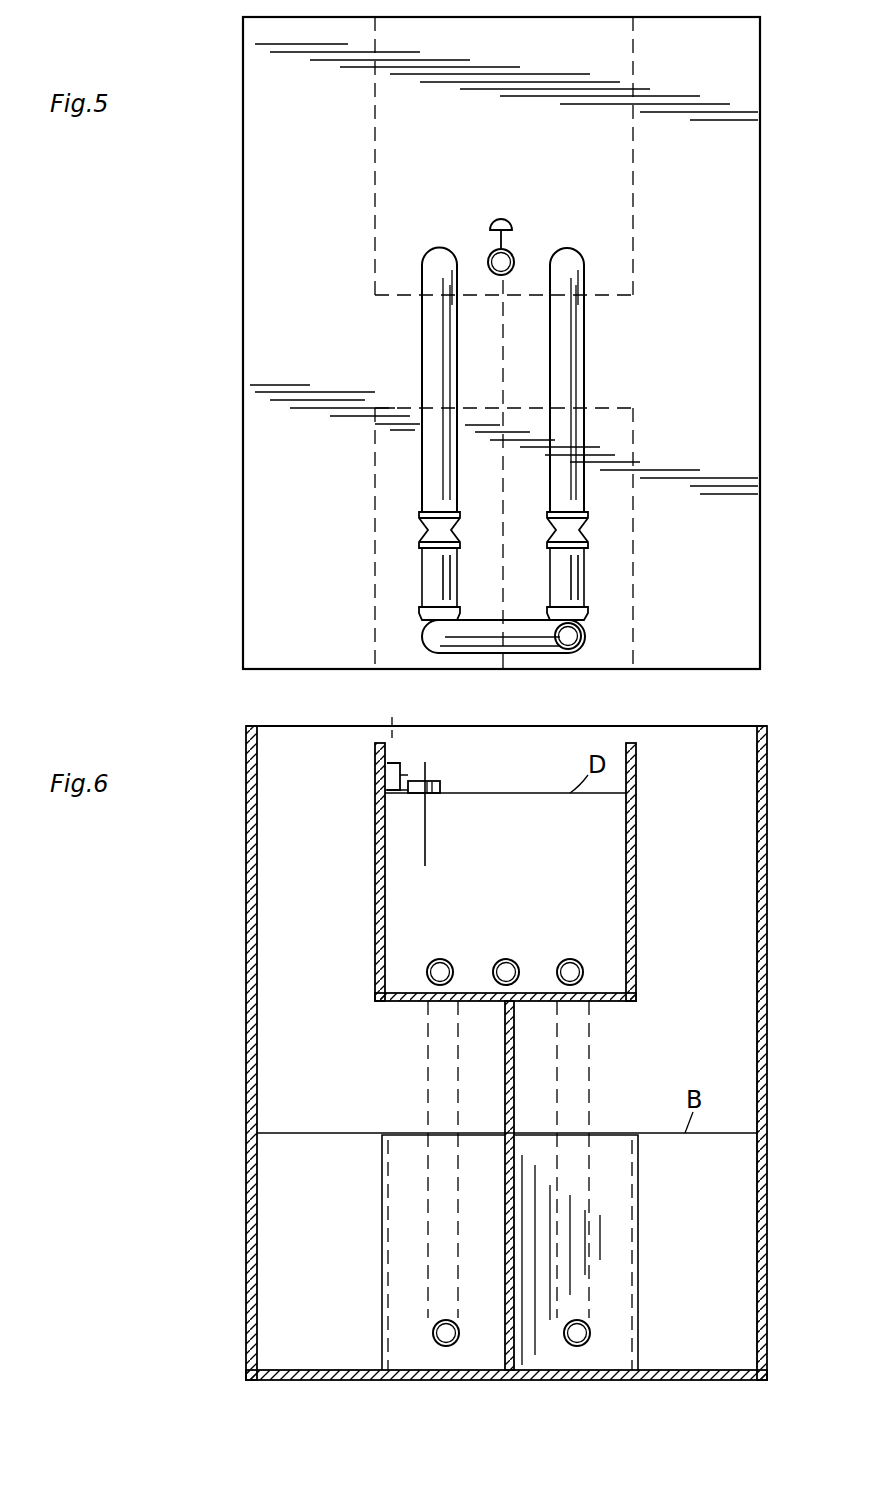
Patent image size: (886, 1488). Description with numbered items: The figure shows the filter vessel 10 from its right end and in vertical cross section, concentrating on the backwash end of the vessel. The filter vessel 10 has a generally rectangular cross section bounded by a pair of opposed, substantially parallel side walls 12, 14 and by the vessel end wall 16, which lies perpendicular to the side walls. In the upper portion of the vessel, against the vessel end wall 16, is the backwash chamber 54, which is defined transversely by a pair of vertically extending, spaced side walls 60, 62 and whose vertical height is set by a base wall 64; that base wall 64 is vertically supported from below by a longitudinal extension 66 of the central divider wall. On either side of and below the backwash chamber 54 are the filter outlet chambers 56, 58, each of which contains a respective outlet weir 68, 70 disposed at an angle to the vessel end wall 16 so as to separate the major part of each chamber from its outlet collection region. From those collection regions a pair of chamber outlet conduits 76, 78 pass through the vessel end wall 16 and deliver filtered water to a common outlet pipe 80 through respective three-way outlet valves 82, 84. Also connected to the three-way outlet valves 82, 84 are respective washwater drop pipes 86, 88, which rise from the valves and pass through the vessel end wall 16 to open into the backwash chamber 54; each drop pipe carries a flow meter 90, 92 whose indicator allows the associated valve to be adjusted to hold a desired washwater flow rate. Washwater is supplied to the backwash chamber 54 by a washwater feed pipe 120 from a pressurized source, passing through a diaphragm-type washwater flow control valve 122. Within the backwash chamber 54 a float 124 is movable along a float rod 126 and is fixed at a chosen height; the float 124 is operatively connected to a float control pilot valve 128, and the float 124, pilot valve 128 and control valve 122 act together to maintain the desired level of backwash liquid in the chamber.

In FIG. 5, the filter vessel 10 is at (200, 262).
In FIG. 6, the filter vessel 10 is at (231, 933).
In FIG. 6, the side wall 12 is at (768, 836).
In FIG. 6, the side wall 14 is at (246, 836).
In FIG. 5, the vessel end wall 16 is at (339, 190).
In FIG. 6, the backwash chamber 54 is at (510, 778).
In FIG. 6, the filter outlet chamber 56 is at (278, 1020).
In FIG. 6, the filter outlet chamber 58 is at (742, 1012).
In FIG. 5, the side wall 60 is at (635, 95).
In FIG. 6, the side wall 60 is at (374, 851).
In FIG. 5, the side wall 62 is at (372, 90).
In FIG. 6, the side wall 62 is at (637, 852).
In FIG. 5, the base wall 64 is at (600, 296).
In FIG. 6, the base wall 64 is at (615, 1002).
In FIG. 6, the longitudinal extension of central divider wall 66 is at (514, 1078).
In FIG. 5, the outlet weir 68 is at (634, 470).
In FIG. 6, the outlet weir 68 is at (608, 1225).
In FIG. 5, the outlet weir 70 is at (374, 466).
In FIG. 6, the outlet weir 70 is at (412, 1220).
In FIG. 6, the chamber outlet conduit 76 is at (433, 1335).
In FIG. 6, the chamber outlet conduit 78 is at (591, 1333).
In FIG. 5, the common outlet pipe 80 is at (583, 636).
In FIG. 5, the three-way outlet valve 82 is at (588, 612).
In FIG. 5, the three-way outlet valve 84 is at (420, 612).
In FIG. 5, the washwater drop pipe 86 is at (585, 372).
In FIG. 6, the washwater drop pipe 86 is at (438, 958).
In FIG. 5, the washwater drop pipe 88 is at (421, 368).
In FIG. 6, the washwater drop pipe 88 is at (572, 958).
In FIG. 5, the flow meter 90 is at (589, 527).
In FIG. 5, the flow meter 92 is at (418, 527).
In FIG. 5, the washwater feed pipe 120 is at (490, 253).
In FIG. 6, the washwater feed pipe 120 is at (505, 958).
In FIG. 5, the washwater flow control valve 122 is at (508, 228).
In FIG. 6, the float 124 is at (440, 782).
In FIG. 6, the float rod 126 is at (427, 847).
In FIG. 6, the float control pilot valve 128 is at (400, 768).